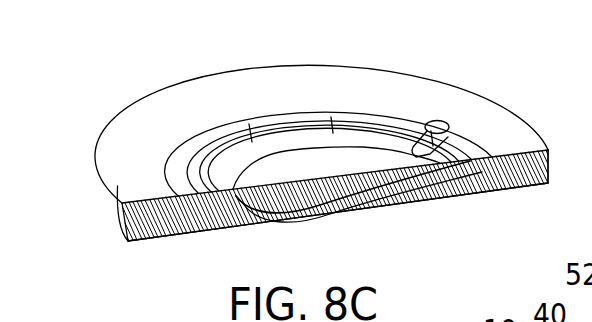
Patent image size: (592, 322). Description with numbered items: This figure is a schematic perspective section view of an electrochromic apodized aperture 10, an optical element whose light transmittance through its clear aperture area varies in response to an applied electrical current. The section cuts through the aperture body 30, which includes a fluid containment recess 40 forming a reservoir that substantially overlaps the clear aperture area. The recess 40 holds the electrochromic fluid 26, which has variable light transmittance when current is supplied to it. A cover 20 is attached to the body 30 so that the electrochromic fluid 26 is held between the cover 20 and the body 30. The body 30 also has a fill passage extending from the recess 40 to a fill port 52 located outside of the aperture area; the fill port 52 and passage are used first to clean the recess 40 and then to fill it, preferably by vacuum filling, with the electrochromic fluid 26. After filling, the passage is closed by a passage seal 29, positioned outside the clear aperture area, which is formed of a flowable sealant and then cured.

The electrochromic apodized aperture 10 is at (205, 266).
The cover 20 is at (373, 139).
The electrochromic fluid 26 is at (396, 202).
The passage seal 29 is at (471, 186).
The aperture body 30 is at (470, 118).
The fluid containment recess 40 is at (262, 222).
The fill port 52 is at (440, 121).